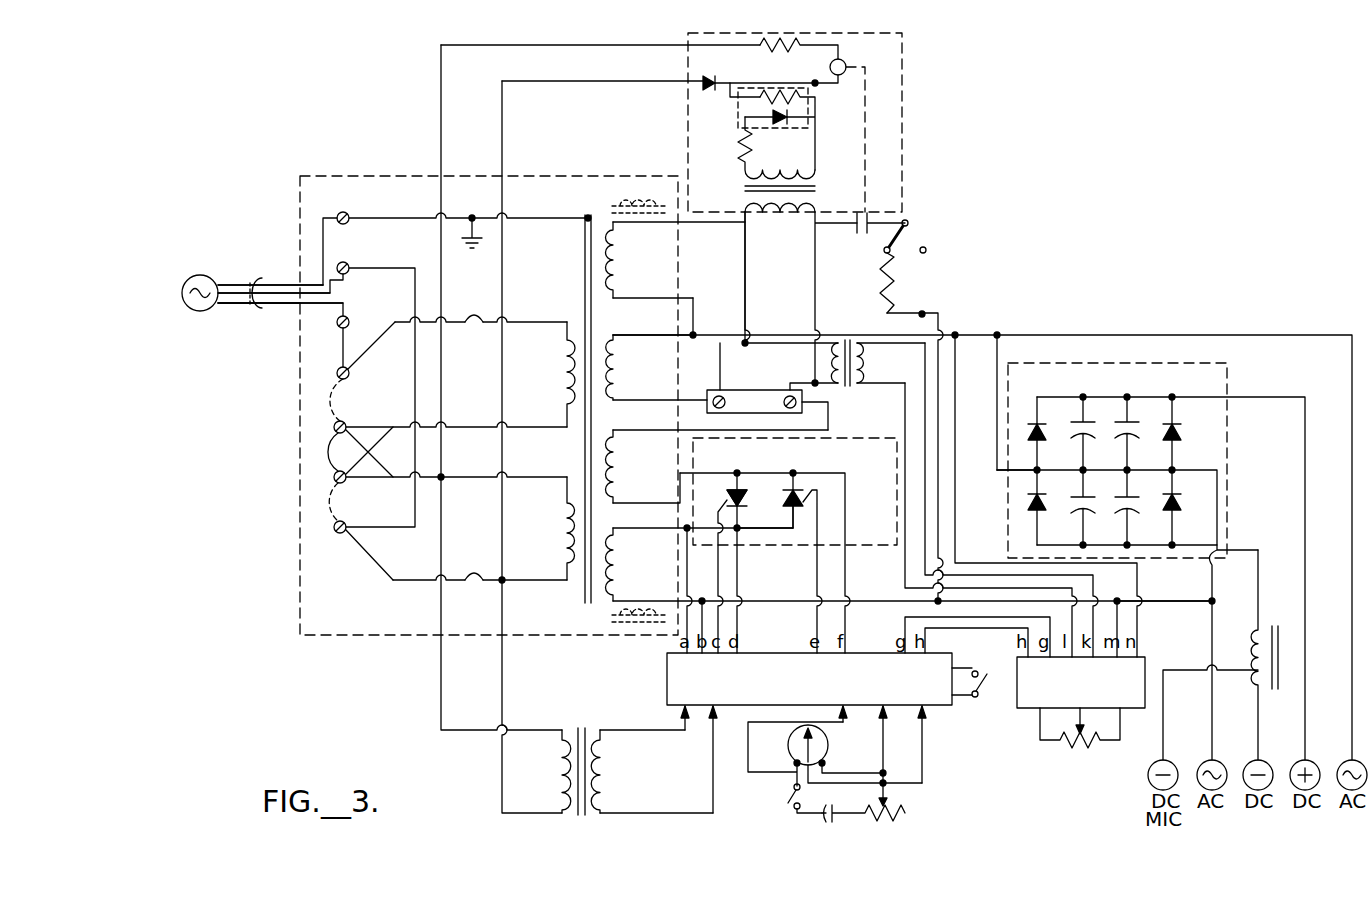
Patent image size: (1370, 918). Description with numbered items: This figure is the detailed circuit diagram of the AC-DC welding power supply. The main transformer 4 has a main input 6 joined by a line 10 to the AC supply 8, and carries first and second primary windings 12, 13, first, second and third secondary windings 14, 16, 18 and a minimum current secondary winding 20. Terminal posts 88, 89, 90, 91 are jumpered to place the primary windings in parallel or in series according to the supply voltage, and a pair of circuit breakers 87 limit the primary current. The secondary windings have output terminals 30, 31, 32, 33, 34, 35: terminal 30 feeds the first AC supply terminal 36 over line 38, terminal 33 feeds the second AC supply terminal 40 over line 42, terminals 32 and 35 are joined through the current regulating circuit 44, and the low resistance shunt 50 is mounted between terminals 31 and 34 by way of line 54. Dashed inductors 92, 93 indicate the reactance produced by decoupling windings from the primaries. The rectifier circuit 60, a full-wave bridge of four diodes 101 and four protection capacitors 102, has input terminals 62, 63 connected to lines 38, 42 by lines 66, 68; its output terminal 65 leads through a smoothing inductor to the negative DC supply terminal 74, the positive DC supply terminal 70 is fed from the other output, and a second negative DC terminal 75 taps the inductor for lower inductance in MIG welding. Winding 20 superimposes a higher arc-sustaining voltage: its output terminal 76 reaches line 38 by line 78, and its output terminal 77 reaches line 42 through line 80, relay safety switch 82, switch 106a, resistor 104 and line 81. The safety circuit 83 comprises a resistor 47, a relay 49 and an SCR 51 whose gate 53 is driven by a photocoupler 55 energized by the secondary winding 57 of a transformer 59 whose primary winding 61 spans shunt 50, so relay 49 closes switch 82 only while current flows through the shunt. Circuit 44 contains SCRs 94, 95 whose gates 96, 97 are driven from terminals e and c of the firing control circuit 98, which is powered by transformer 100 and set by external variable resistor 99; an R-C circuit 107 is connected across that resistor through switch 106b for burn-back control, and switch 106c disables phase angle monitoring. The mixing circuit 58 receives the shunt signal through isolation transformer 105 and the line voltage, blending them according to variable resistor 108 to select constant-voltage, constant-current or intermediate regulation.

The main transformer 4 is at (344, 176).
The main input 6 is at (288, 305).
The AC supply 8 is at (215, 282).
The line 10 is at (260, 281).
The first primary winding 12 is at (552, 374).
The second primary winding 13 is at (560, 514).
The first secondary winding 14 is at (618, 347).
The second secondary winding 16 is at (615, 544).
The third secondary winding 18 is at (616, 444).
The minimum current secondary winding 20 is at (620, 243).
The first output terminal 30 is at (673, 330).
The second output terminal 31 is at (673, 402).
The first output terminal 32 is at (673, 528).
The second output terminal 33 is at (675, 601).
The first output terminal 34 is at (672, 430).
The second output terminal 35 is at (673, 503).
The first AC supply terminal 36 is at (1346, 761).
The line 38 is at (1129, 335).
The second AC supply terminal 40 is at (1206, 761).
The line 42 is at (1172, 602).
The current regulating circuit 44 is at (861, 440).
The resistor 47 is at (778, 52).
The relay 49 is at (847, 64).
The low resistance shunt 50 is at (728, 390).
The SCR 51 is at (716, 78).
The gate 53 is at (724, 88).
The line 54 is at (827, 417).
The photocoupler 55 is at (812, 108).
The secondary winding 57 is at (771, 170).
The mixing circuit 58 is at (1148, 662).
The transformer 59 is at (821, 188).
The rectifier circuit 60 is at (1229, 468).
The primary winding 61 is at (821, 210).
The input terminal 62 is at (995, 474).
The input terminal 63 is at (1211, 564).
The output terminal 65 is at (1224, 547).
The line 66 is at (996, 382).
The line 68 is at (1213, 602).
The positive DC supply terminal 70 is at (1298, 761).
The negative DC supply terminal 74 is at (1252, 761).
The second negative DC terminal 75 is at (1158, 761).
The output terminal 76 is at (682, 298).
The output terminal 77 is at (682, 222).
The line 78 is at (698, 318).
The line 80 is at (753, 226).
The line 81 is at (943, 335).
The relay safety switch 82 is at (860, 232).
The safety circuit 83 is at (905, 143).
The circuit breakers 87 is at (468, 324).
The terminal post 88 is at (346, 521).
The terminal post 89 is at (346, 480).
The terminal post 90 is at (346, 424).
The terminal post 91 is at (348, 376).
The inductor 92 is at (612, 622).
The transformer core end 93 is at (618, 196).
The SCR 94 is at (790, 511).
The SCR 95 is at (749, 499).
The gate 96 is at (815, 494).
The gate 97 is at (725, 504).
The firing control circuit 98 is at (950, 706).
The external variable resistor 99 is at (828, 742).
The transformer 100 is at (585, 724).
The diodes 101 is at (1045, 426).
The protection capacitors 102 is at (1087, 426).
The resistor 104 is at (893, 285).
The isolation transformer 105 is at (863, 362).
The switch 106a is at (916, 238).
The switch 106b is at (786, 800).
The switch 106c is at (983, 700).
The R-C circuit 107 is at (864, 812).
The variable resistor 108 is at (1066, 750).